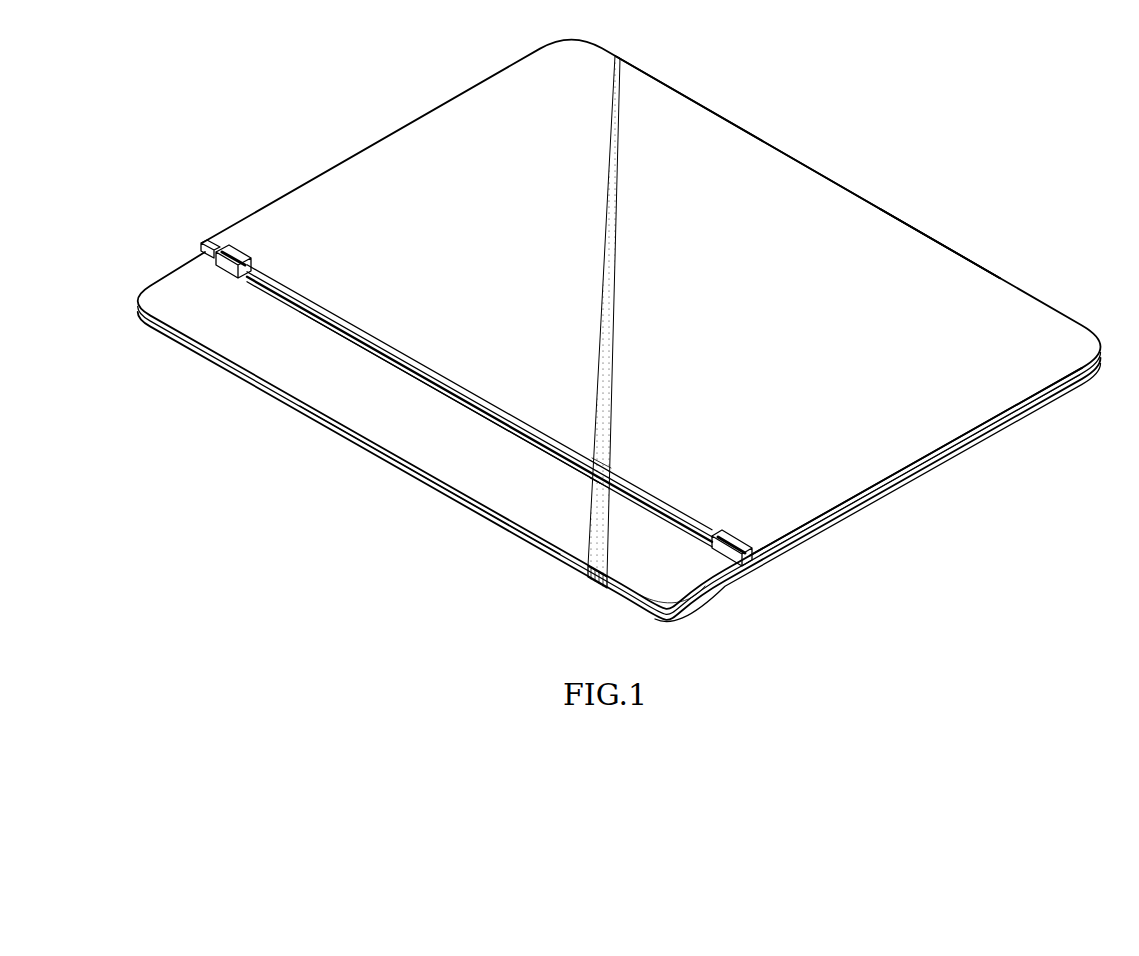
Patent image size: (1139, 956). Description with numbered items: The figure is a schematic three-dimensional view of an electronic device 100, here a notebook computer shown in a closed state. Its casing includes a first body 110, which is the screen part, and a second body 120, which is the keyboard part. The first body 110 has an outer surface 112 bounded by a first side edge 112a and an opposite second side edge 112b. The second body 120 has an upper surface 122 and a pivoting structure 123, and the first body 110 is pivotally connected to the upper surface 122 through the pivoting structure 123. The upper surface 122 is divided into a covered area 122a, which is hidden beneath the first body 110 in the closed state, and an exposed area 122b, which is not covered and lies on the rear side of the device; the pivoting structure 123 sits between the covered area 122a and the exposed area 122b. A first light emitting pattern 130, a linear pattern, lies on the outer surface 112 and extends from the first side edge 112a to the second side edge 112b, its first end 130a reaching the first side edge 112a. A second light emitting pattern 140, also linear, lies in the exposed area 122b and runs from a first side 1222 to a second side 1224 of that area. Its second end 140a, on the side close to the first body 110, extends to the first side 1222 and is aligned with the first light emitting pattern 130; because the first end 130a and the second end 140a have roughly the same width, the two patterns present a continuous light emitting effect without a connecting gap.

The electronic device 100 is at (305, 107).
The first body 110 is at (1035, 328).
The outer surface 112 is at (756, 165).
The first side edge 112a is at (421, 360).
The second side edge 112b is at (931, 228).
The second body 120 is at (298, 378).
The upper surface 122 is at (1022, 543).
The covered area 122a is at (897, 494).
The exposed area 122b is at (666, 565).
The pivoting structure 123 is at (736, 530).
The first light emitting pattern 130 is at (616, 140).
The first end 130a is at (614, 466).
The second light emitting pattern 140 is at (596, 587).
The second end 140a is at (590, 483).
The first side 1222 is at (428, 397).
The second side 1224 is at (437, 492).